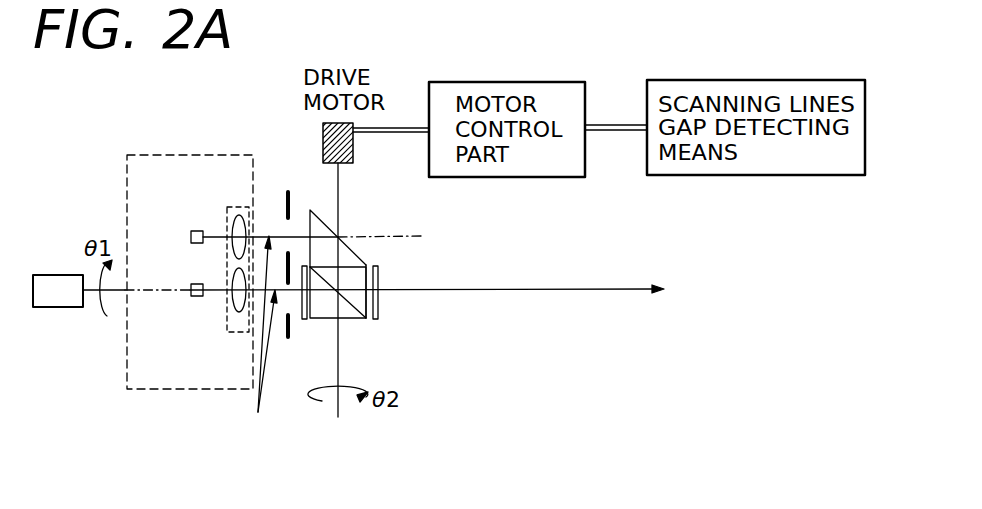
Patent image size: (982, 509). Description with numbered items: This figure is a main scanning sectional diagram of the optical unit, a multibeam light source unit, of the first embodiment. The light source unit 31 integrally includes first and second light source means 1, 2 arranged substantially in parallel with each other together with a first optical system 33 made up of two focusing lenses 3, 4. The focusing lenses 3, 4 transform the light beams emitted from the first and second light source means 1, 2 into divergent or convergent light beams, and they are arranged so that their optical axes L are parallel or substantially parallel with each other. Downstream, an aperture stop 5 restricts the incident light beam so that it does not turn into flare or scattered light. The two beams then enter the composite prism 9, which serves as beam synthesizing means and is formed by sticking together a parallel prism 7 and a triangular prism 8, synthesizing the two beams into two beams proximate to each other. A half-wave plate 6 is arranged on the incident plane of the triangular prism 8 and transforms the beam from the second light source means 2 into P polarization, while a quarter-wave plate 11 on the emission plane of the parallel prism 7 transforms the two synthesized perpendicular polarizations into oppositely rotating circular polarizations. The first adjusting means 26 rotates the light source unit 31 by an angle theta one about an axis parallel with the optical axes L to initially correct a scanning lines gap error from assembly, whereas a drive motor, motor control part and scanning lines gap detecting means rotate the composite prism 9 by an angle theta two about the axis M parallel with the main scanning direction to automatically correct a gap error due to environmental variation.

The first light source means 1 is at (193, 230).
The second light source means 2 is at (195, 296).
The focusing lens 3 is at (233, 217).
The focusing lens 4 is at (239, 312).
The aperture stop 5 is at (288, 190).
The half-wave plate 6 is at (306, 320).
The parallel prism 7 is at (349, 262).
The triangular prism 8 is at (353, 320).
The composite prism 9 is at (323, 220).
The quarter-wave plate 11 is at (377, 320).
The first adjusting means 26 is at (58, 307).
The light source unit 31 is at (150, 155).
The first optical system 33 is at (247, 207).
The optical axes L is at (266, 341).
The axis M is at (338, 413).